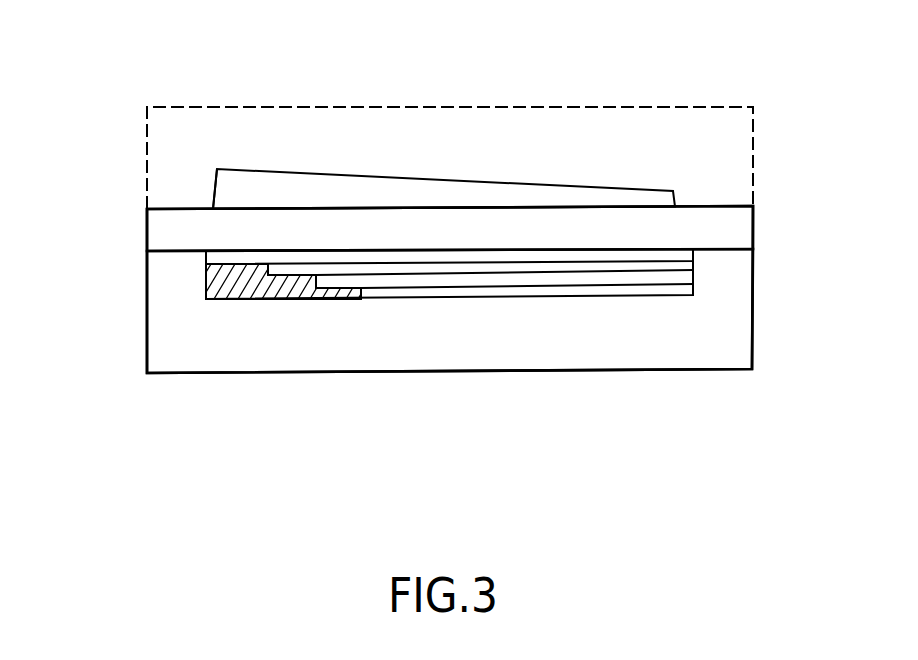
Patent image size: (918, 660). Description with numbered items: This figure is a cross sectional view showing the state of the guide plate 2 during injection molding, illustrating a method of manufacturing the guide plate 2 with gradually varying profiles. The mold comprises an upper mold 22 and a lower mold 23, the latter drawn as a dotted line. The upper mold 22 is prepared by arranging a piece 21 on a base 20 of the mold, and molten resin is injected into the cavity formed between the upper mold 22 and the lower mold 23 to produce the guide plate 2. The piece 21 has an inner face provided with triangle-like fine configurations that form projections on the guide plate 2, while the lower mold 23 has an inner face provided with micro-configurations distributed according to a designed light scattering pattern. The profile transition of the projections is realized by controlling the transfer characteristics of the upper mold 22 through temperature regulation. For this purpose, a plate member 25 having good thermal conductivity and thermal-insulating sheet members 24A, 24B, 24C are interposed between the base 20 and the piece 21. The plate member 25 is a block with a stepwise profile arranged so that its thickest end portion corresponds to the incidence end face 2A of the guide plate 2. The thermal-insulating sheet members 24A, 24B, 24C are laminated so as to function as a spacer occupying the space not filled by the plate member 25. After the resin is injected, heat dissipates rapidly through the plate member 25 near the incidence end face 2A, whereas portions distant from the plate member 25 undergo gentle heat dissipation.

The guide plate 2 is at (640, 188).
The incidence end face 2A is at (214, 186).
The base 20 is at (412, 352).
The piece 21 is at (735, 226).
The upper mold 22 is at (121, 350).
The lower mold 23 is at (171, 106).
The thermal-insulating sheet member 24A is at (620, 288).
The thermal-insulating sheet member 24B is at (674, 276).
The thermal-insulating sheet member 24C is at (687, 262).
The plate member 25 is at (253, 303).